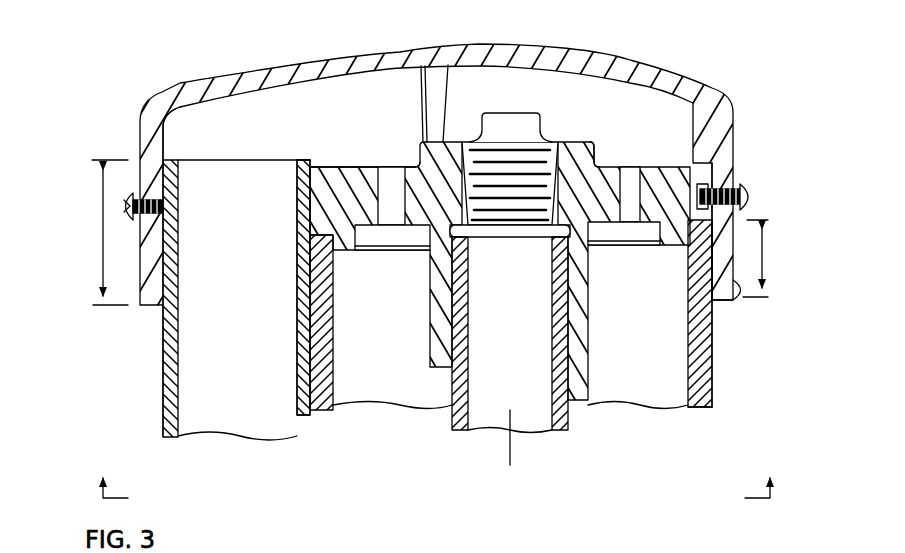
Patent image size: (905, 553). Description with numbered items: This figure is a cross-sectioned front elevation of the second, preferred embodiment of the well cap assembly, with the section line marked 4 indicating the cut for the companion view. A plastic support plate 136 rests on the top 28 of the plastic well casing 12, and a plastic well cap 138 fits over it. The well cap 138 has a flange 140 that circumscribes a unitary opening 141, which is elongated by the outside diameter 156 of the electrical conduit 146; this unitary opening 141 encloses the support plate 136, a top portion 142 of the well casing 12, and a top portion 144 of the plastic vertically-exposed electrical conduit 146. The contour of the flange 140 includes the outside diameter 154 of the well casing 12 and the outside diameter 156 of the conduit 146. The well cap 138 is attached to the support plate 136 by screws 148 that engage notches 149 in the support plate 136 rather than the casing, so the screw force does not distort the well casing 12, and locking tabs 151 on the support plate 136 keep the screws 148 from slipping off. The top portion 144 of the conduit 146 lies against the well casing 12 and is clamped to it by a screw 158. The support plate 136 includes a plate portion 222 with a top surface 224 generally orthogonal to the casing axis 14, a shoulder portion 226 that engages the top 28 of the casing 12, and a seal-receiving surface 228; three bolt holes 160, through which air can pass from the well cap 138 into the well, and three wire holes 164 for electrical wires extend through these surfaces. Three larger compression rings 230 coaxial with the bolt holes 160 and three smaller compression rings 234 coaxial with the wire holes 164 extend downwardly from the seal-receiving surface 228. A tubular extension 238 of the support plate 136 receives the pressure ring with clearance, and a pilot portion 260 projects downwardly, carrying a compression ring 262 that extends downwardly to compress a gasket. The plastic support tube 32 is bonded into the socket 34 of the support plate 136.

The well casing 12 is at (722, 391).
The casing axis 14 is at (513, 450).
The top of the well casing 28 is at (324, 238).
The support tube 32 is at (440, 427).
The socket 34 is at (455, 392).
The support plate 136 is at (403, 132).
The well cap 138 is at (596, 27).
The flange 140 is at (740, 285).
The unitary opening 141 is at (183, 132).
The top portion of the well casing 142 is at (763, 252).
The top portion of the electrical conduit 144 is at (88, 280).
The electrical conduit 146 is at (124, 352).
The screws 148 is at (745, 190).
The notches 149 is at (716, 215).
The locking tabs 151 is at (722, 170).
The outside diameter of the well casing 154 is at (712, 357).
The outside diameter of the electrical conduit 156 is at (163, 380).
The screw 158 is at (124, 200).
The bolt holes 160 is at (393, 165).
The wire holes 164 is at (645, 168).
The plate portion 222 is at (350, 167).
The top surface 224 is at (660, 167).
The shoulder portion 226 is at (307, 268).
The seal-receiving surface 228 is at (650, 228).
The larger compression rings 230 is at (418, 255).
The smaller compression rings 234 is at (645, 250).
The tubular extension 238 is at (588, 352).
The pilot portion 260 is at (355, 255).
The compression ring 262 is at (340, 288).
The section line 4- 4 is at (436, 470).